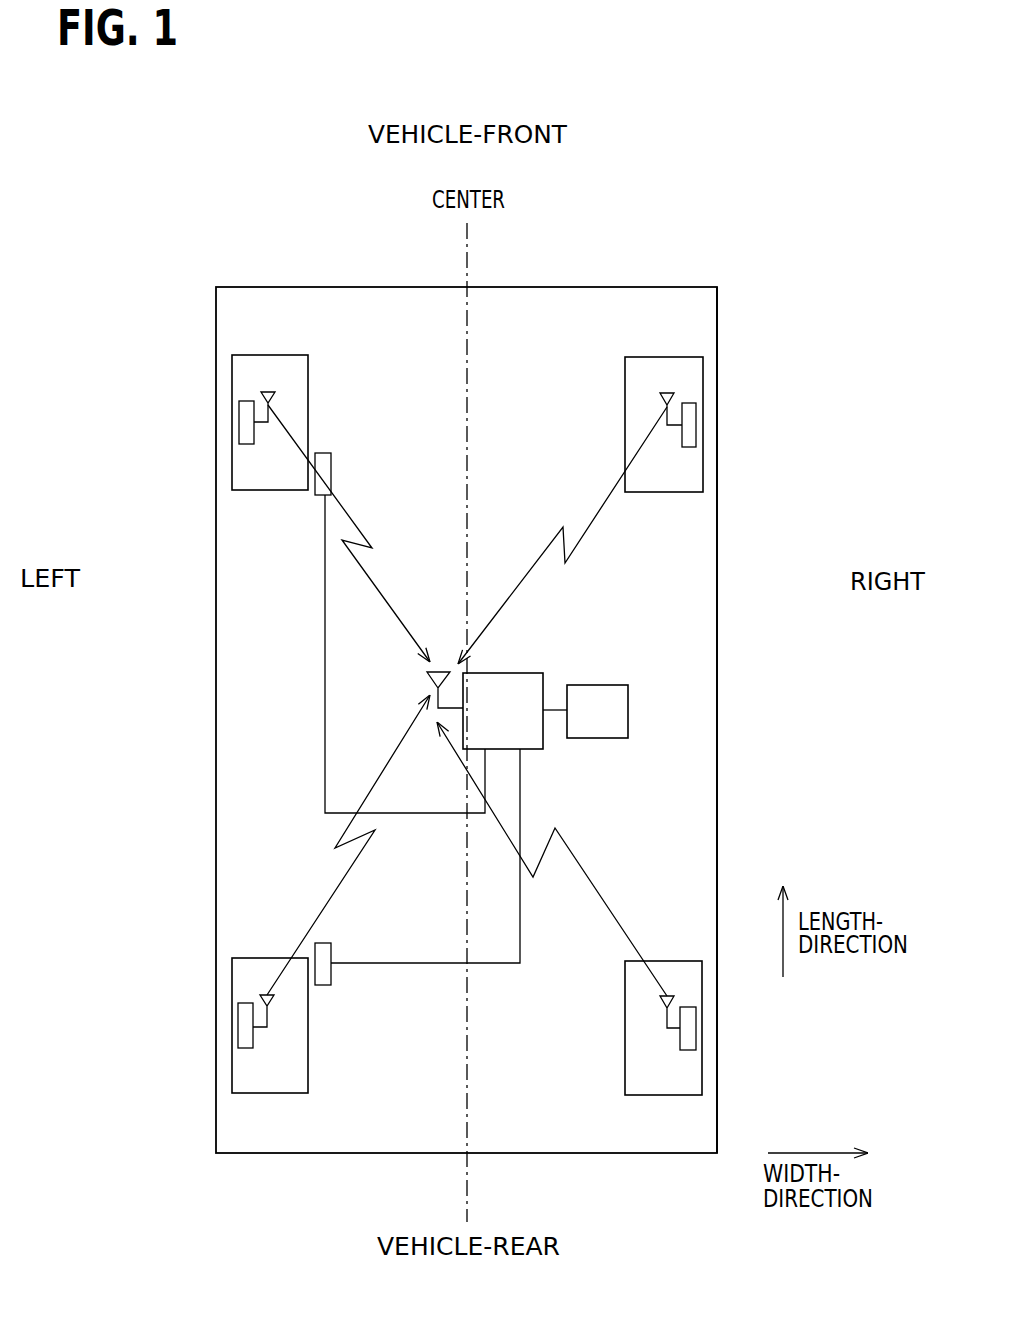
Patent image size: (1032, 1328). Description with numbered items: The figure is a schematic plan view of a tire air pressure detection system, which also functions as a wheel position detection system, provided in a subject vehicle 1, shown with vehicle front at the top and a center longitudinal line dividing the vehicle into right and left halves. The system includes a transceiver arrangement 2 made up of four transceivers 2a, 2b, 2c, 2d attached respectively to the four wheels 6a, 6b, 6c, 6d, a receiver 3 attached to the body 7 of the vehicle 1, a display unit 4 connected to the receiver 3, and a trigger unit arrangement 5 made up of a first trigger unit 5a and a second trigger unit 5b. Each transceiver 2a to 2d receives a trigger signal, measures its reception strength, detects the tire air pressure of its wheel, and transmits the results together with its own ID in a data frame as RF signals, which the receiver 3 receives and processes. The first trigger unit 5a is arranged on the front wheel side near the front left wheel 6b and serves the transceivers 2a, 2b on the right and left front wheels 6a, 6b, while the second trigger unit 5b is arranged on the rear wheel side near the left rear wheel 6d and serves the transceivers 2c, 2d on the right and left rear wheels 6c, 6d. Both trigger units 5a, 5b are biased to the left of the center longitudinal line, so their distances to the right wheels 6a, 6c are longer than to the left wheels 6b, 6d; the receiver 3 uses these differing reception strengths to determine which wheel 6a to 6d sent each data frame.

The vehicle 1 is at (626, 286).
The transceiver arrangement 2 is at (464, 730).
The transceiver 2a is at (690, 404).
The transceiver 2b is at (240, 402).
The transceiver 2c is at (688, 1052).
The transceiver 2d is at (243, 1049).
The receiver 3 is at (512, 672).
The display unit 4 is at (598, 740).
The trigger unit arrangement 5 is at (155, 630).
The first trigger unit 5a is at (318, 496).
The second trigger unit 5b is at (322, 943).
The right front wheel 6a is at (658, 357).
The left front wheel 6b is at (276, 355).
The right rear wheel 6c is at (678, 1097).
The left rear wheel 6d is at (257, 1094).
The body 7 is at (718, 652).